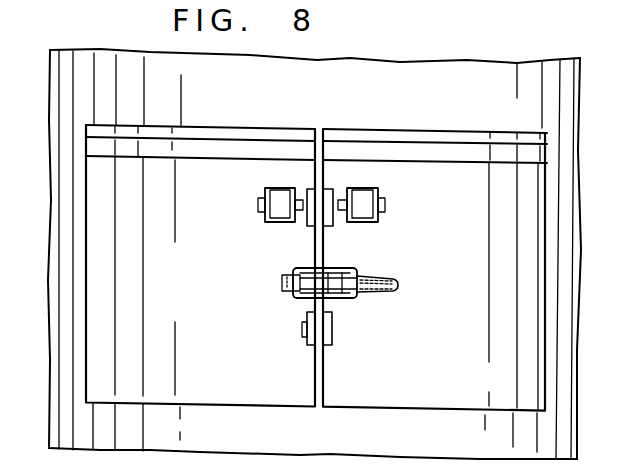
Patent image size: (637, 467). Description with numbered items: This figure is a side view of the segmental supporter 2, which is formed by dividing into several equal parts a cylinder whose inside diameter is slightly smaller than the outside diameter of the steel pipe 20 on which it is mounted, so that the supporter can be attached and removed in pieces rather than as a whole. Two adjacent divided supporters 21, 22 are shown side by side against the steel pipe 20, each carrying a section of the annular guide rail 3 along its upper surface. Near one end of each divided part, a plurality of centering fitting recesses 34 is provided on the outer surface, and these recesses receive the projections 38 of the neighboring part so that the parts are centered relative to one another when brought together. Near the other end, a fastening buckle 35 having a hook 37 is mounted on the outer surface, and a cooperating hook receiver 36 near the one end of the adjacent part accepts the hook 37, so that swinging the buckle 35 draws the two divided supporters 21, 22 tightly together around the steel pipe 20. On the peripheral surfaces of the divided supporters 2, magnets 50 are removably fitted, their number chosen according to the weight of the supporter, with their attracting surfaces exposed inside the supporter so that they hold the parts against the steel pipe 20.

The supporter 2 is at (497, 389).
The annular guide rail 3 is at (392, 129).
The steel pipe 20 is at (62, 95).
The divided supporter 21 is at (227, 397).
The divided supporter 22 is at (412, 399).
The centering fitting recess 34 is at (309, 226).
The fastening buckle 35 is at (377, 277).
The hook receiver 36 is at (283, 282).
The hook 37 is at (337, 302).
The projection 38 is at (329, 226).
The magnet 50 is at (264, 192).